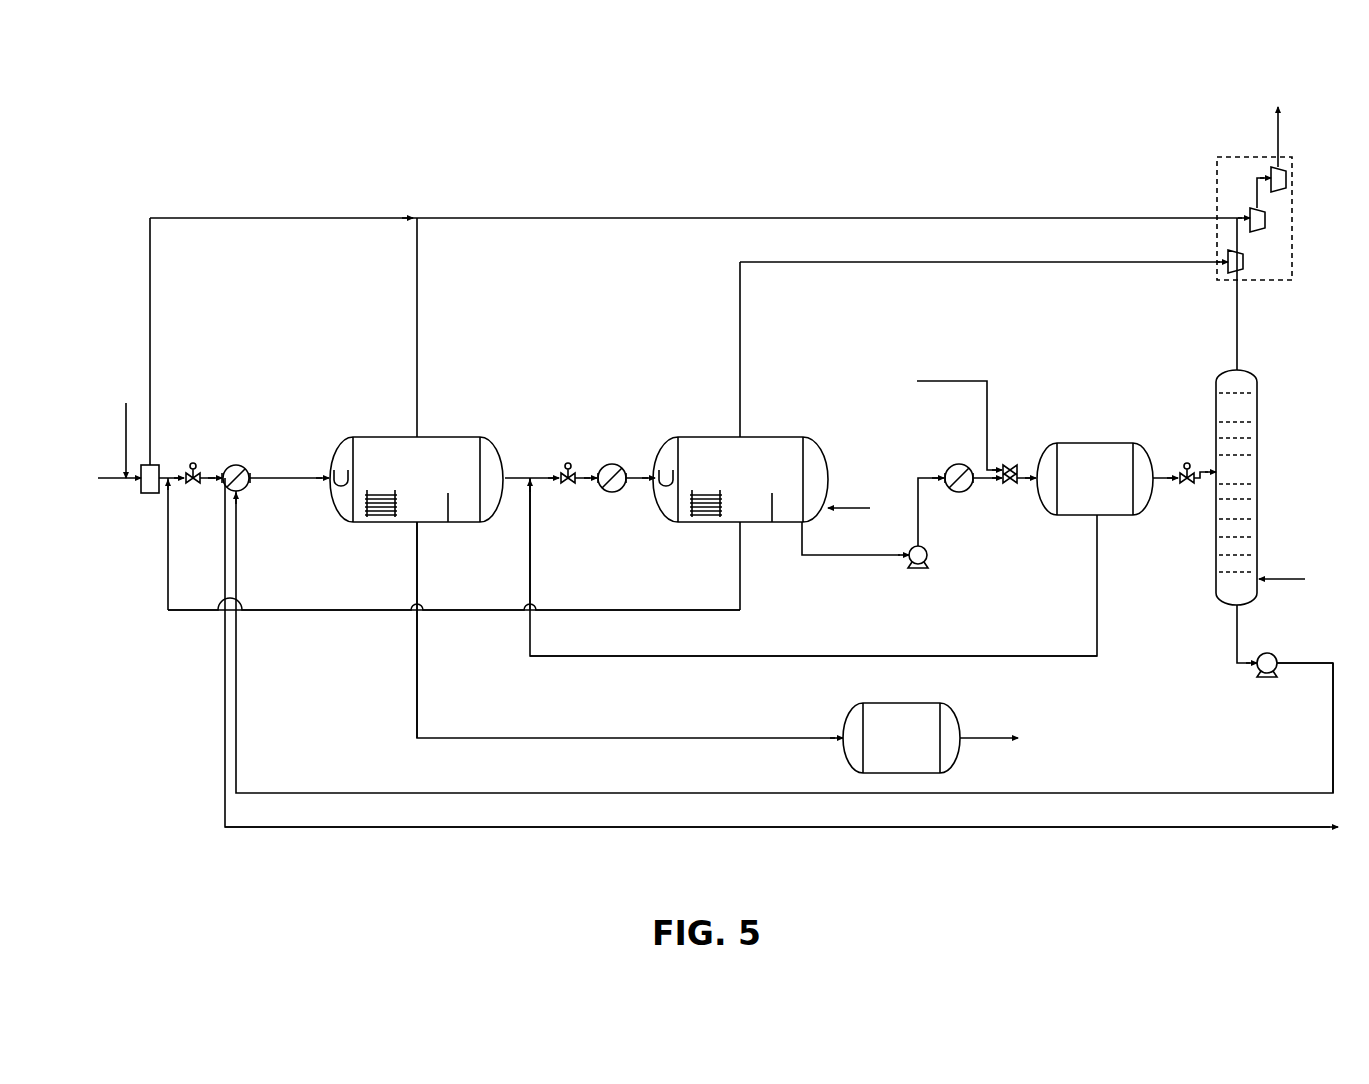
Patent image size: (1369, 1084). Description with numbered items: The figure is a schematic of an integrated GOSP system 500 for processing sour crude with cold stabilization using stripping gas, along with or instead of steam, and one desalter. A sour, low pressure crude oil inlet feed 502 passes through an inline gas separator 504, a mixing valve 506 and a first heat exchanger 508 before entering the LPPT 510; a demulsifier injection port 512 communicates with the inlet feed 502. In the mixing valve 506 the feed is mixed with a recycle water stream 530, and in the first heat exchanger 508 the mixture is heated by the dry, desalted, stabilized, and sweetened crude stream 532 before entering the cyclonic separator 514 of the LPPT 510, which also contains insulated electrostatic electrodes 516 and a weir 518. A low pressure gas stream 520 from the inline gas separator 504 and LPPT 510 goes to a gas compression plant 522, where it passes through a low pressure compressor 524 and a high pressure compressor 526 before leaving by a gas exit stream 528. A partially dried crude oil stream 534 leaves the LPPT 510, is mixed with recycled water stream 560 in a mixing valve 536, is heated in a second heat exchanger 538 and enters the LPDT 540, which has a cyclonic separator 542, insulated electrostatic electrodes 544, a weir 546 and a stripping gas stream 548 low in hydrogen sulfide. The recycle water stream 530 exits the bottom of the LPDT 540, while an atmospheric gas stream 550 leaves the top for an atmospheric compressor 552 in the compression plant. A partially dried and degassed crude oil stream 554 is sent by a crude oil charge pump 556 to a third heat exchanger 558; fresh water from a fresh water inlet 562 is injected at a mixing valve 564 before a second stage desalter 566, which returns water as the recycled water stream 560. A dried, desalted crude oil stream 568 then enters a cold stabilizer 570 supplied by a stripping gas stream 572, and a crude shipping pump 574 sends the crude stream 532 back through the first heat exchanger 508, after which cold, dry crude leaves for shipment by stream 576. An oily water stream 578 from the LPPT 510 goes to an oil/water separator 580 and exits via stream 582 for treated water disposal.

The integrated GOSP system 500 is at (970, 115).
The low pressure crude oil inlet feed 502 is at (92, 478).
The inline gas separator 504 is at (152, 493).
The mixing valve 506 is at (193, 465).
The first heat exchanger 508 is at (238, 465).
The LPPT 510 is at (443, 478).
The demulsifier injection port 512 is at (125, 417).
The cyclonic separator 514 is at (330, 488).
The insulated electrostatic electrodes 516 is at (383, 522).
The weir 518 is at (452, 522).
The low pressure gas stream 520 is at (460, 216).
The gas compression plant 522 is at (1237, 157).
The low pressure compressor 524 is at (1258, 232).
The high pressure compressor 526 is at (1286, 192).
The gas exit stream 528 is at (1290, 122).
The recycle water stream 530 is at (612, 610).
The dry, desalted, stabilized, and sweetened crude stream 532 is at (1283, 661).
The partially dried crude oil stream 534 is at (516, 468).
The mixing valve 536 is at (568, 465).
The second heat exchanger 538 is at (612, 493).
The LPDT 540 is at (767, 478).
The cyclonic separator 542 is at (661, 487).
The insulated electrostatic electrodes 544 is at (712, 522).
The weir 546 is at (778, 512).
The stripping gas stream 548 is at (843, 505).
The atmospheric gas stream 550 is at (1030, 263).
The atmospheric compressor 552 is at (1243, 273).
The partially dried and degassed crude oil stream 554 is at (880, 558).
The crude oil charge pump 556 is at (920, 570).
The third heat exchanger 558 is at (965, 490).
The recycled water stream 560 is at (695, 658).
The fresh water inlet 562 is at (958, 378).
The mixing valve 564 is at (1015, 462).
The second stage desalter 566 is at (1122, 495).
The dried, desalted crude oil stream 568 is at (1168, 468).
The cold stabilizer 570 is at (1258, 475).
The stripping gas stream 572 is at (1280, 578).
The crude shipping pump 574 is at (1265, 678).
The stream 576 is at (1232, 829).
The oily water stream 578 is at (417, 686).
The oil/water separator 580 is at (928, 755).
The stream 582 is at (995, 737).